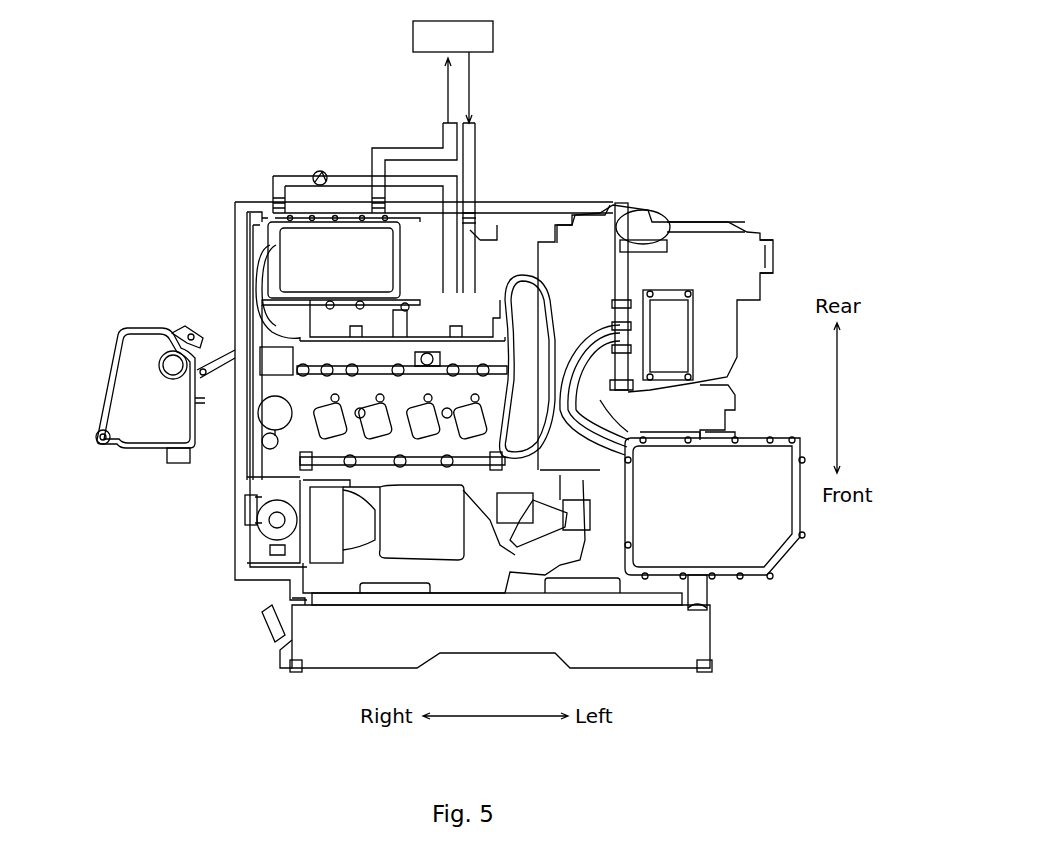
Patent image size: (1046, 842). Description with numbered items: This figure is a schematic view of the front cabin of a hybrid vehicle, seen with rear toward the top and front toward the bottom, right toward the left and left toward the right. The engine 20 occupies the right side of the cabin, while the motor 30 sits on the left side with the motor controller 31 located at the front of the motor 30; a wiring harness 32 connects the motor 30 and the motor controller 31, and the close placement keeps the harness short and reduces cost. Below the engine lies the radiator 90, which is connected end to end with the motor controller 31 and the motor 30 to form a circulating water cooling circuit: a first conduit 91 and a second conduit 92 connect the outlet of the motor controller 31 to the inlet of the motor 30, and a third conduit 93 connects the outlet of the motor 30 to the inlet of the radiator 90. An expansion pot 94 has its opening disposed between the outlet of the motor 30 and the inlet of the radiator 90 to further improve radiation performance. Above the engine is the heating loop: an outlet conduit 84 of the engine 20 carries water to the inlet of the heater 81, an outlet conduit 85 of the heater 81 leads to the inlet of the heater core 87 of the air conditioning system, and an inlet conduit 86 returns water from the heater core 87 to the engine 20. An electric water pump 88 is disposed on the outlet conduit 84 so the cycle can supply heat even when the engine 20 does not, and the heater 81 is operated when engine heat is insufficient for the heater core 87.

The engine 20 is at (282, 483).
The motor 30 is at (723, 290).
The motor controller 31 is at (742, 530).
The wiring harness 32 is at (585, 205).
The heater 81 is at (285, 255).
The outlet conduit of the engine 84 is at (290, 180).
The outlet conduit of the heater 85 is at (380, 150).
The inlet conduit of the engine 86 is at (470, 160).
The heater core 87 is at (467, 29).
The electric water pump 88 is at (315, 173).
The radiator 90 is at (645, 648).
The first conduit 91 is at (702, 588).
The second conduit 92 is at (650, 410).
The third conduit 93 is at (240, 287).
The expansion pot 94 is at (153, 400).